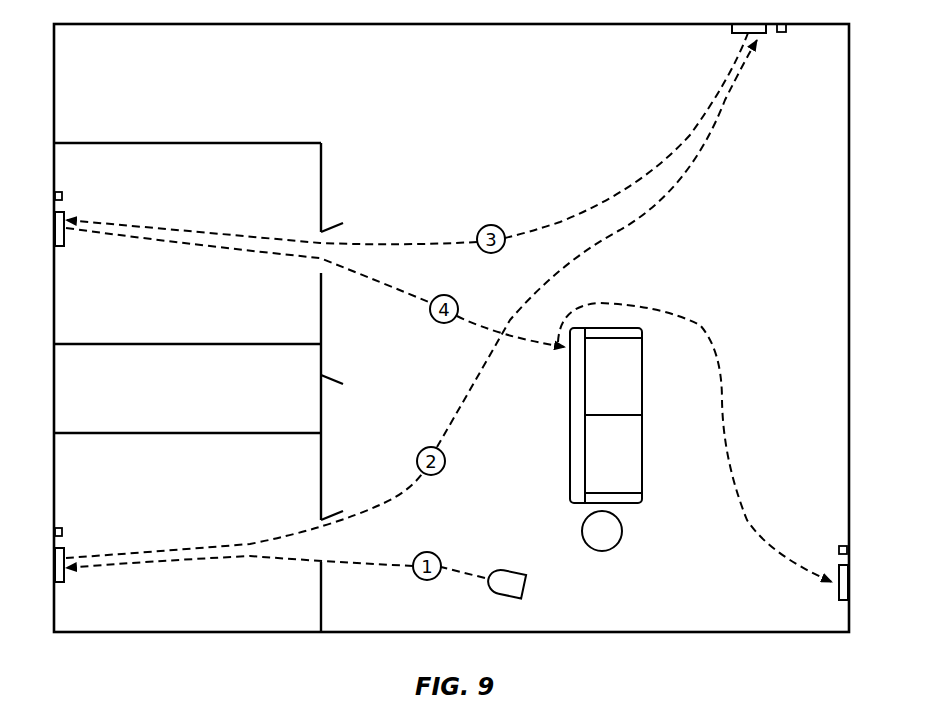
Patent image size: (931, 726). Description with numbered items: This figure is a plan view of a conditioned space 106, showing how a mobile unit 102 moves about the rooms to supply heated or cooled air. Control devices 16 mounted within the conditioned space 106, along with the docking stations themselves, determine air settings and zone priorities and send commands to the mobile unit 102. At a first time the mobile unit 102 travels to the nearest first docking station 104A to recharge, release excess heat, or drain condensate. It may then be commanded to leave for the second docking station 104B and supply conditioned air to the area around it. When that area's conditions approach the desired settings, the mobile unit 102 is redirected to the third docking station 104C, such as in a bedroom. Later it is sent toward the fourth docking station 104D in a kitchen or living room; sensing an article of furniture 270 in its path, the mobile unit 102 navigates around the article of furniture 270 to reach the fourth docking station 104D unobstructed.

The conditioned space 106 is at (420, 93).
The control device 16 is at (56, 193).
The first docking station 104A is at (56, 570).
The second docking station 104B is at (750, 28).
The third docking station 104C is at (56, 229).
The fourth docking station 104D is at (845, 582).
The mobile unit 102 is at (515, 570).
The article of furniture 270 is at (642, 415).